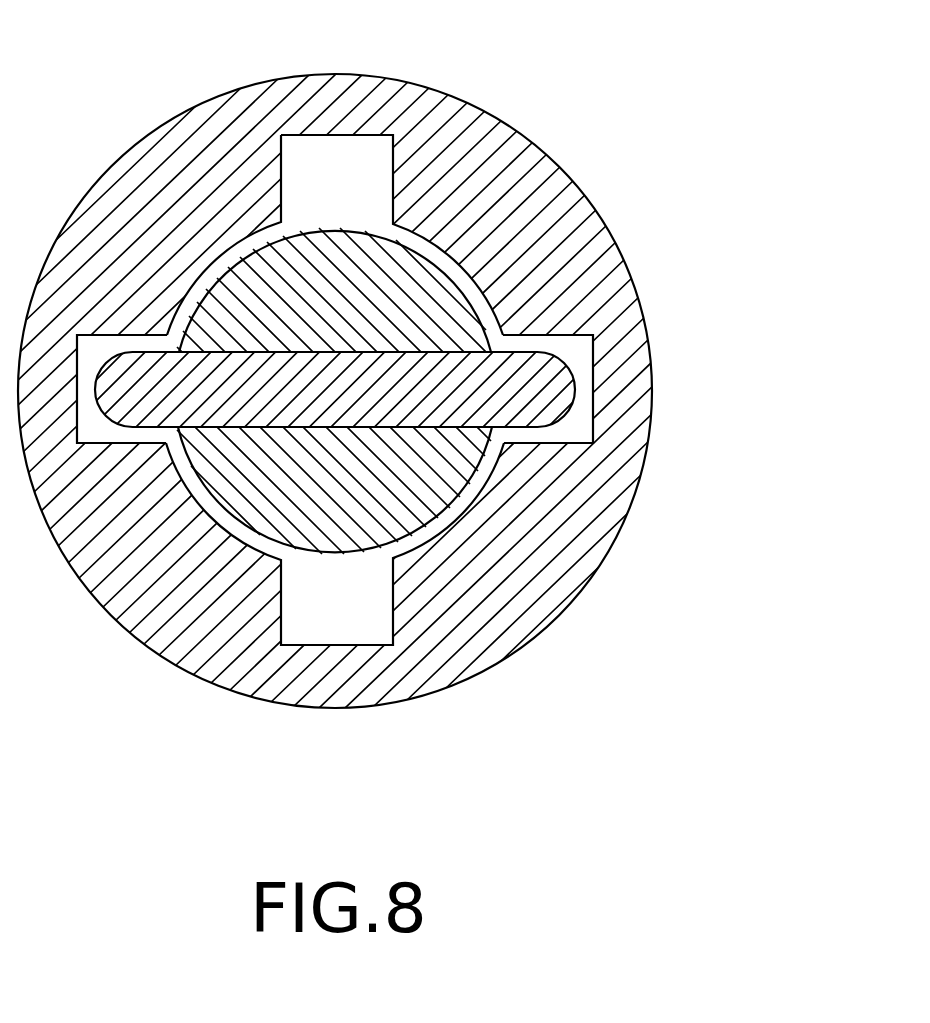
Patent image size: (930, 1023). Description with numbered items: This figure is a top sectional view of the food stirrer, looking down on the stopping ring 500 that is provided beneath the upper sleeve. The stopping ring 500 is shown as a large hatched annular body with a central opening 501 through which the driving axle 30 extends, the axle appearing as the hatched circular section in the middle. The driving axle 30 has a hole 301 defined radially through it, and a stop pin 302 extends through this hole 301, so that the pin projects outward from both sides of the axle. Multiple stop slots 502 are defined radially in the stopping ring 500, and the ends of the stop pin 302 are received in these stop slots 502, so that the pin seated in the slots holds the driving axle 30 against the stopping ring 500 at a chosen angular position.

The driving axle 30 is at (327, 282).
The hole 301 is at (410, 355).
The stop pin 302 is at (533, 403).
The stopping ring 500 is at (563, 260).
The opening 501 is at (440, 537).
The stop slots 502 is at (578, 362).